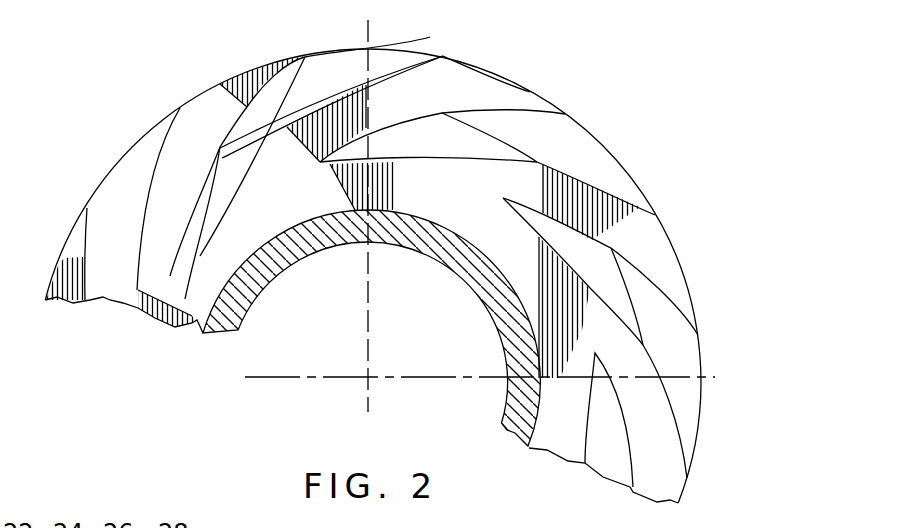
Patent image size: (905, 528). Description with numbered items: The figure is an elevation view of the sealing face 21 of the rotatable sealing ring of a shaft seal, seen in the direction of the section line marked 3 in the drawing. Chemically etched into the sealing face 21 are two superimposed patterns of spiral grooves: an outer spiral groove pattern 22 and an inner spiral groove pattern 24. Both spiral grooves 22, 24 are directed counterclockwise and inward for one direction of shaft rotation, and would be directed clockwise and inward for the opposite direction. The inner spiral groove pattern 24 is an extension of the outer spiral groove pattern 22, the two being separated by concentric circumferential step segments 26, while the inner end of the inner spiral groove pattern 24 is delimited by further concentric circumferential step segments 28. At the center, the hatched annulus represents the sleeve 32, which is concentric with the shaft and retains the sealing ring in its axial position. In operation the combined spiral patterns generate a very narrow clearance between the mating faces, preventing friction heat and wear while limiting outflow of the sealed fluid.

The section line 3- 3 is at (444, 36).
The radially extending face 21 is at (284, 205).
The outer spiral groove pattern 22 is at (507, 118).
The inner spiral groove pattern 24 is at (455, 145).
The concentric circumferential step segments 26 is at (523, 142).
The concentric circumferential step segments 28 is at (383, 160).
The sleeve 32 is at (267, 276).